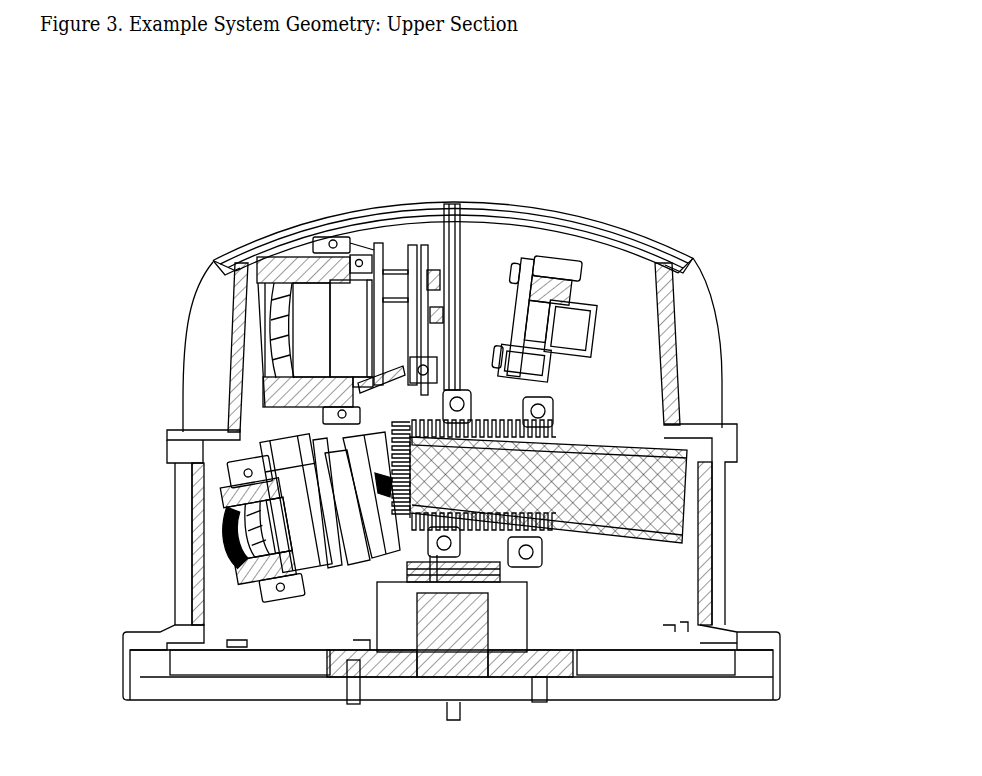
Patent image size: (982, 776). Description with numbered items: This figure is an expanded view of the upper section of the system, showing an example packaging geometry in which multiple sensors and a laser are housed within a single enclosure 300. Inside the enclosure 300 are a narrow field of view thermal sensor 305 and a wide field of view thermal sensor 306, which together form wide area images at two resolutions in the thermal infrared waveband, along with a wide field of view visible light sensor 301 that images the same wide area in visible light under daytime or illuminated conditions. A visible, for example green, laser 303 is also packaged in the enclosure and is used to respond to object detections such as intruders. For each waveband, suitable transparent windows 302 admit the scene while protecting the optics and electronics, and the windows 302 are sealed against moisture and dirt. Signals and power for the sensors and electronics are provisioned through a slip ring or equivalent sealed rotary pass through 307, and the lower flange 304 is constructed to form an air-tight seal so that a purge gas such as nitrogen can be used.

The enclosure 300 is at (360, 195).
The wide field of view visible light sensor 301 is at (577, 323).
The transparent windows 302 is at (668, 312).
The laser 303 is at (622, 430).
The lower flange 304 is at (752, 627).
The narrow field of view thermal sensor 305 is at (322, 318).
The wide field of view thermal sensor 306 is at (302, 510).
The sealed rotary pass through 307 is at (388, 640).